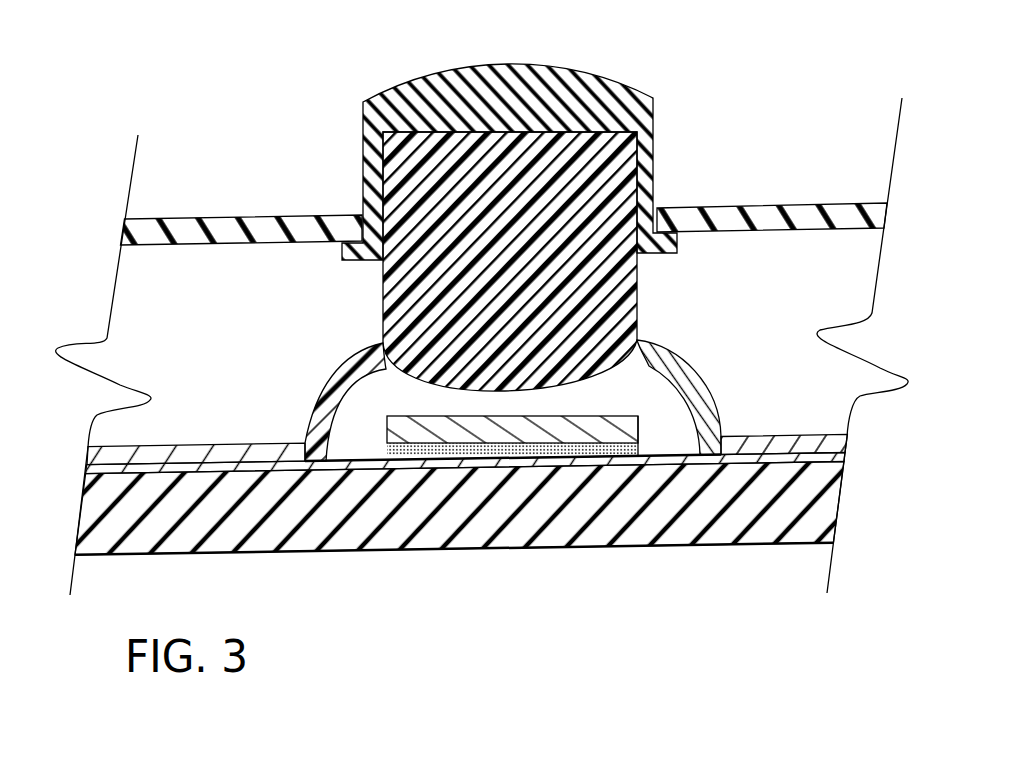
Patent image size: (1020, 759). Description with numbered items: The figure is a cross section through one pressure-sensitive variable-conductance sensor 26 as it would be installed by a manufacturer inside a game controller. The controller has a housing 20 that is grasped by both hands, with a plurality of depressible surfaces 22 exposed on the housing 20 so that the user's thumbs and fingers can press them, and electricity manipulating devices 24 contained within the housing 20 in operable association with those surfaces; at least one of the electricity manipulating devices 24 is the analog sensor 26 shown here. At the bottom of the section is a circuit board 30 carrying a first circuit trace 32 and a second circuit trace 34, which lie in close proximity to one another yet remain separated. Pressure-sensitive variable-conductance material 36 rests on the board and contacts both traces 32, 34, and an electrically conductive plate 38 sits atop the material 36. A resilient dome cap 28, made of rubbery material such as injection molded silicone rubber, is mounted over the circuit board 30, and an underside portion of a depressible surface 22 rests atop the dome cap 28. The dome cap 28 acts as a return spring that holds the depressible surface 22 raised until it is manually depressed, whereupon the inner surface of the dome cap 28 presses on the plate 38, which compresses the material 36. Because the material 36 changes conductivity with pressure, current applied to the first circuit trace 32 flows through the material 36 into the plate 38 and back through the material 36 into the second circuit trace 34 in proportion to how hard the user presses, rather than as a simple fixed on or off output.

The housing 20 is at (238, 218).
The depressible surface 22 is at (605, 78).
The electricity manipulating device 24 is at (343, 101).
The pressure-sensitive variable-conductance sensor 26 is at (498, 493).
The resilient dome cap 28 is at (637, 290).
The circuit board 30 is at (497, 510).
The first circuit trace 32 is at (843, 453).
The second circuit trace 34 is at (188, 468).
The pressure-sensitive variable-conductance material 36 is at (606, 452).
The electrically conductive plate 38 is at (428, 418).